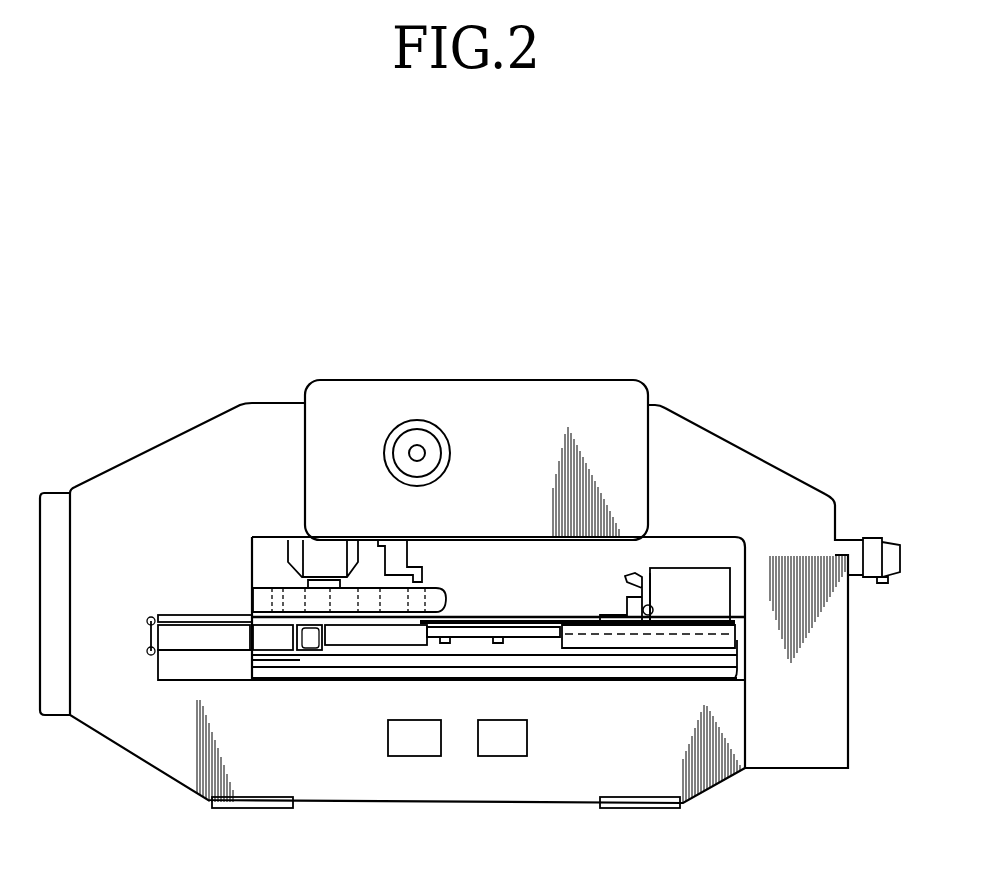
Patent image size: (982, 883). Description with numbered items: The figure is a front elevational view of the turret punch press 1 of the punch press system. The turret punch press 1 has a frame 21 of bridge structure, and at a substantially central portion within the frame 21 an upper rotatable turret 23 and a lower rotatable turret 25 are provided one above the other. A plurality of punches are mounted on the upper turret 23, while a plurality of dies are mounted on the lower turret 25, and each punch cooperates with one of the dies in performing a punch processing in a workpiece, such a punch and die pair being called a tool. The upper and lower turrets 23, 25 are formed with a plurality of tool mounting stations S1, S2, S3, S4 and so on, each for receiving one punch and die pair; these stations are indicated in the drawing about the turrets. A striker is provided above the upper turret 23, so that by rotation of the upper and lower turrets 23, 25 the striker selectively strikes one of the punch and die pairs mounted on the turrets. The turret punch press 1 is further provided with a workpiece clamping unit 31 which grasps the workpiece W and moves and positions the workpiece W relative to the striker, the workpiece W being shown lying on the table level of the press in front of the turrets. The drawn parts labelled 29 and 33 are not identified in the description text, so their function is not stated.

The turret punch press 1 is at (622, 378).
The frame 21 is at (185, 453).
The upper rotatable turret 23 is at (440, 597).
The lower rotatable turret 25 is at (381, 628).
The tool holder bracket 29 is at (408, 553).
The workpiece clamping unit 31 is at (620, 597).
The table base 33 is at (550, 655).
The workpiece W is at (534, 618).
The tool mounting station S1 is at (413, 600).
The tool mounting station S2 is at (365, 598).
The tool mounting station S3 is at (283, 635).
The tool mounting station S4 is at (292, 612).